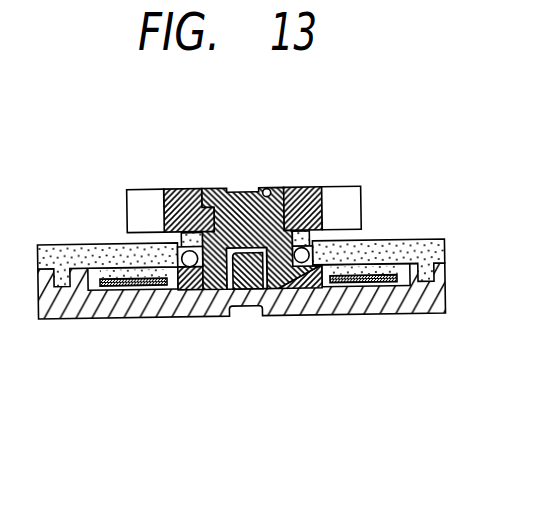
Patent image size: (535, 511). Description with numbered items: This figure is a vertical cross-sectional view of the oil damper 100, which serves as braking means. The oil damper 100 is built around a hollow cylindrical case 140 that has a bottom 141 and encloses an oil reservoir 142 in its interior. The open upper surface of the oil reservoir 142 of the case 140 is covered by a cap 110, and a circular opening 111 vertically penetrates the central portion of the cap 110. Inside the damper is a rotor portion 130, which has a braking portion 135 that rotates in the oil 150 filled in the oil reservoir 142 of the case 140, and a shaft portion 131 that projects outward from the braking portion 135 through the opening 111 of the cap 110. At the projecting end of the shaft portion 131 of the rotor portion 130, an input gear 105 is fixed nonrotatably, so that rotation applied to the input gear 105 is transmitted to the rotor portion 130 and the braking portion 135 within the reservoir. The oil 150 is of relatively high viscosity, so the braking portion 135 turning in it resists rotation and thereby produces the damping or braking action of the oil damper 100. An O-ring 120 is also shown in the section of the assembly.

The oil damper 100 is at (240, 261).
The input gear 105 is at (147, 200).
The cap 110 is at (55, 258).
The circular opening 111 is at (190, 200).
The O-ring 120 is at (321, 231).
The rotor portion 130 is at (261, 178).
The shaft portion 131 is at (283, 191).
The braking portion 135 is at (122, 292).
The hollow cylindrical case 140 is at (410, 300).
The bottom 141 is at (217, 292).
The oil reservoir 142 is at (369, 288).
The oil 150 is at (92, 294).